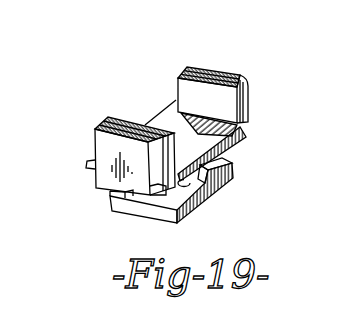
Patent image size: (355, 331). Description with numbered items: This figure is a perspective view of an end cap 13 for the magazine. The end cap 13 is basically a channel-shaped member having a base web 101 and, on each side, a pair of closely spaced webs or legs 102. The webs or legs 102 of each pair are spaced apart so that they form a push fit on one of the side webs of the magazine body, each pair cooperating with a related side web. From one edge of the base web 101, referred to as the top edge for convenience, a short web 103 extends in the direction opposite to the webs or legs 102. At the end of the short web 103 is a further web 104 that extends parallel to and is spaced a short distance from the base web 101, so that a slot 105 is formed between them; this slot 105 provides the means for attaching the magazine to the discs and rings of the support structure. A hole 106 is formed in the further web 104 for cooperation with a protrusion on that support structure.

The end cap 13 is at (148, 105).
The base web 101 is at (244, 131).
The webs or legs 102 is at (216, 77).
The short web 103 is at (110, 195).
The further web 104 is at (150, 212).
The slot 105 is at (204, 168).
The hole 106 is at (191, 182).